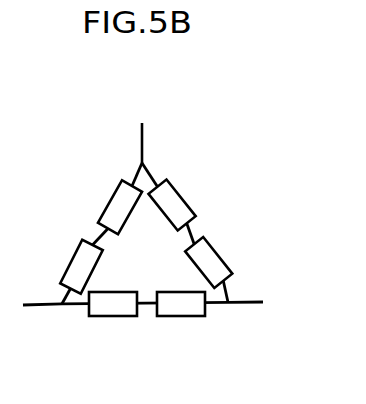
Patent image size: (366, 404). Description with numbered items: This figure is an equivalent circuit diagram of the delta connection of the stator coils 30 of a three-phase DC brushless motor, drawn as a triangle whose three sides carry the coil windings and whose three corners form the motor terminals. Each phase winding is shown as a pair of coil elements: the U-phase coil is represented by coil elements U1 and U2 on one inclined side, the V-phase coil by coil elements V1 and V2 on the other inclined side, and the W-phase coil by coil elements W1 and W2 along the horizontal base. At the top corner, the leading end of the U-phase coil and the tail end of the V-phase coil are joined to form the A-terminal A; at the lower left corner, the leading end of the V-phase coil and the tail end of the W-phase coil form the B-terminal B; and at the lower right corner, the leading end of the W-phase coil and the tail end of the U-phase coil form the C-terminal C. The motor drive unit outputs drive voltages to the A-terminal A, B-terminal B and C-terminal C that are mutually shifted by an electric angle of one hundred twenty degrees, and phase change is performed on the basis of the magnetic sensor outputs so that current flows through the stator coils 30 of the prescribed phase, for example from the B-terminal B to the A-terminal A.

The stator coils 30 is at (78, 246).
The A-terminal A is at (158, 129).
The B-terminal B is at (31, 304).
The C-terminal C is at (261, 299).
The coil U1 is at (183, 205).
The coil U2 is at (218, 261).
The coil V1 is at (70, 267).
The coil V2 is at (107, 207).
The coil W1 is at (181, 323).
The coil W2 is at (113, 323).